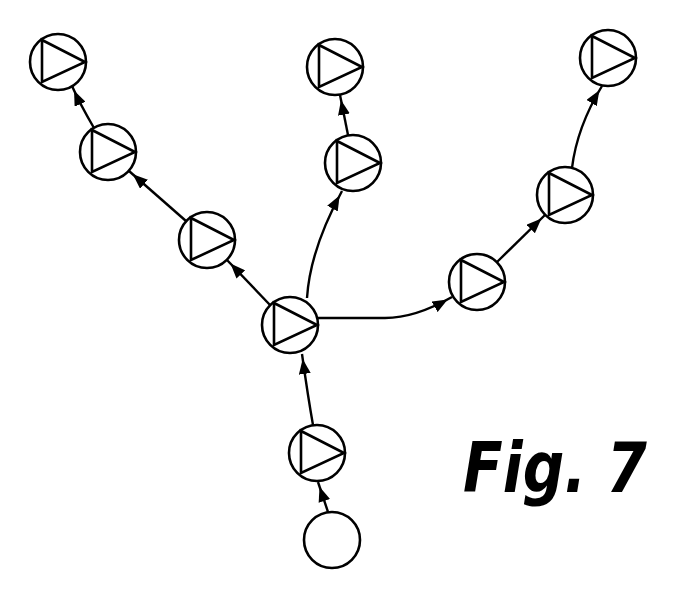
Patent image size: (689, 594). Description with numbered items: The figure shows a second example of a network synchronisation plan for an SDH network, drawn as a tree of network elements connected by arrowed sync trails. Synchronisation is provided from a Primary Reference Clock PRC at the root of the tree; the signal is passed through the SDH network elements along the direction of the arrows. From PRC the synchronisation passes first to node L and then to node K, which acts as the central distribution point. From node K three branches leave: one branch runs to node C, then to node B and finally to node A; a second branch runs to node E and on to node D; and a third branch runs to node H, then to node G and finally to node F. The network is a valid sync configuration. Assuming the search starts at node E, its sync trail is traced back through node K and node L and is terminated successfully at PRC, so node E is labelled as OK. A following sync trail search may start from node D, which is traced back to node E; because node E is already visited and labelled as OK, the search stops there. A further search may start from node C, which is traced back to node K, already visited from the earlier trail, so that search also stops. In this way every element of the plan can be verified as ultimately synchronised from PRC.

The node A is at (68, 53).
The node B is at (109, 138).
The node C is at (207, 222).
The node D is at (345, 55).
The node E is at (365, 160).
The node F is at (597, 49).
The node G is at (562, 181).
The node H is at (477, 267).
The node K is at (304, 327).
The node L is at (325, 449).
The Primary Reference Clock PRC is at (332, 540).